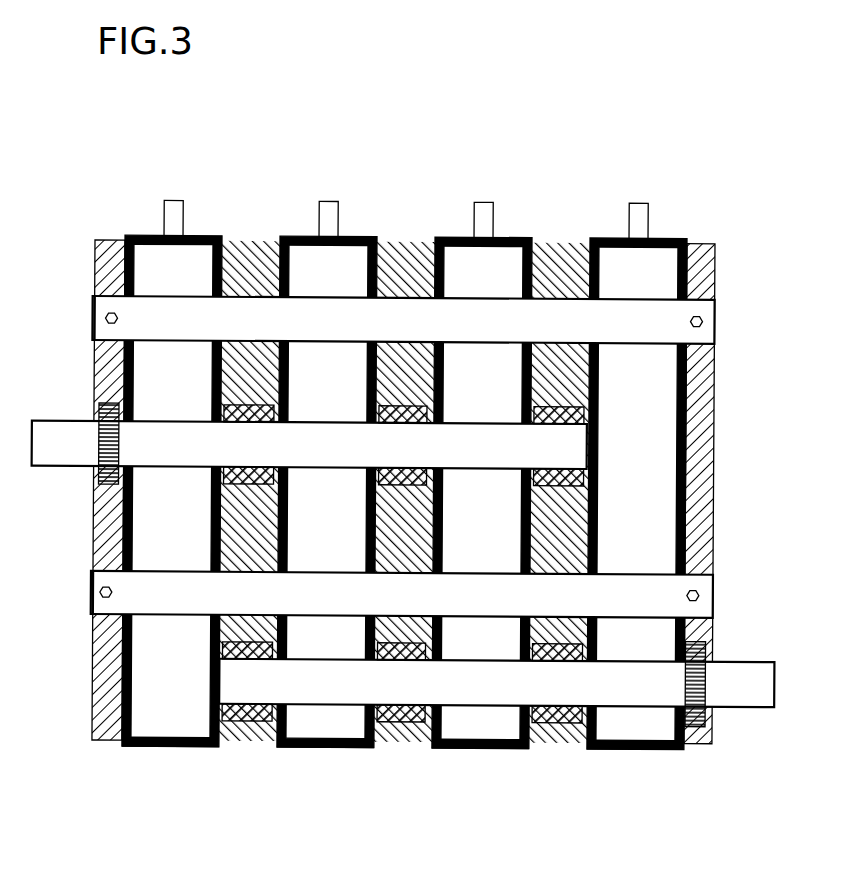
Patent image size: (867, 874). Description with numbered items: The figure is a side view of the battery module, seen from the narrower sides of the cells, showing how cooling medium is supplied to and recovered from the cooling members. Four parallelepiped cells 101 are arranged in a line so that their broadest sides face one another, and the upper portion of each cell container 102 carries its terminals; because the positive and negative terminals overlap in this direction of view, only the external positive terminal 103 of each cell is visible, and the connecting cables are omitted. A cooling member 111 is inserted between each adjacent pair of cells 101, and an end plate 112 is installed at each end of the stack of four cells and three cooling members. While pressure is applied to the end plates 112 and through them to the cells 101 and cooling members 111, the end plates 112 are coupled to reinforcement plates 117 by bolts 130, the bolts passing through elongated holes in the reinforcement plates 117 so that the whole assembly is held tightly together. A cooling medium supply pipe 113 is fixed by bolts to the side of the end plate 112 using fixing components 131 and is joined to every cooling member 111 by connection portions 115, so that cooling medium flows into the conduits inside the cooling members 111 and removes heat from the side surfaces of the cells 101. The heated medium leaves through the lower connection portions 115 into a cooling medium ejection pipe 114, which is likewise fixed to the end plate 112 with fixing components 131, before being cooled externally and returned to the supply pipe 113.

The parallelepiped cell 101 is at (125, 762).
The cell container 102 is at (690, 241).
The external positive terminal 103 is at (170, 200).
The cooling member 111 is at (250, 240).
The end plate 112 is at (105, 238).
The cooling medium supply pipe 113 is at (58, 421).
The cooling medium ejection pipe 114 is at (760, 660).
The connection portion 115 is at (588, 475).
The reinforcement plate 117 is at (98, 298).
The bolt 130 is at (99, 319).
The fixing component 131 is at (95, 483).